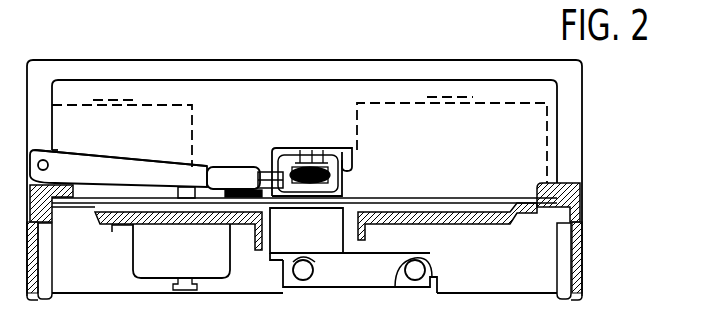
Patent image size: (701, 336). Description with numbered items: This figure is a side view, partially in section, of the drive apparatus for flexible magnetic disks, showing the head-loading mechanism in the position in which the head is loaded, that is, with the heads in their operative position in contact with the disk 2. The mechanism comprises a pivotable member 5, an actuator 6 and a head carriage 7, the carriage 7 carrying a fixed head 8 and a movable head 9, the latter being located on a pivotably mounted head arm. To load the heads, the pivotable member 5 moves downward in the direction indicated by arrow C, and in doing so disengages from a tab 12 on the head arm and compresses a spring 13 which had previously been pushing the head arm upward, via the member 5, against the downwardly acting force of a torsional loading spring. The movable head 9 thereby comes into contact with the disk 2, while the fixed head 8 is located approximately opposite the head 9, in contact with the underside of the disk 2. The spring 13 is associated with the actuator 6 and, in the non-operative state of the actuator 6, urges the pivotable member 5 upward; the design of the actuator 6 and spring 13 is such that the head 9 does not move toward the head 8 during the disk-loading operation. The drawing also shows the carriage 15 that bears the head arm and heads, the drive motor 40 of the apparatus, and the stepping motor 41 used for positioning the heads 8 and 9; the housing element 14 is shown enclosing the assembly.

The flexible magnetic disk 2 is at (495, 202).
The pivotable member 5 is at (150, 172).
The actuator 6 is at (208, 267).
The head carriage 7 is at (298, 144).
The fixed head 8 is at (300, 212).
The movable head 9 is at (340, 183).
The tab 12 is at (262, 170).
The spring 13 is at (208, 172).
The housing lid 14 is at (213, 70).
The carriage 15 is at (383, 268).
The drive motor 40 is at (72, 115).
The stepping motor 41 is at (370, 112).
The arrow C is at (116, 178).